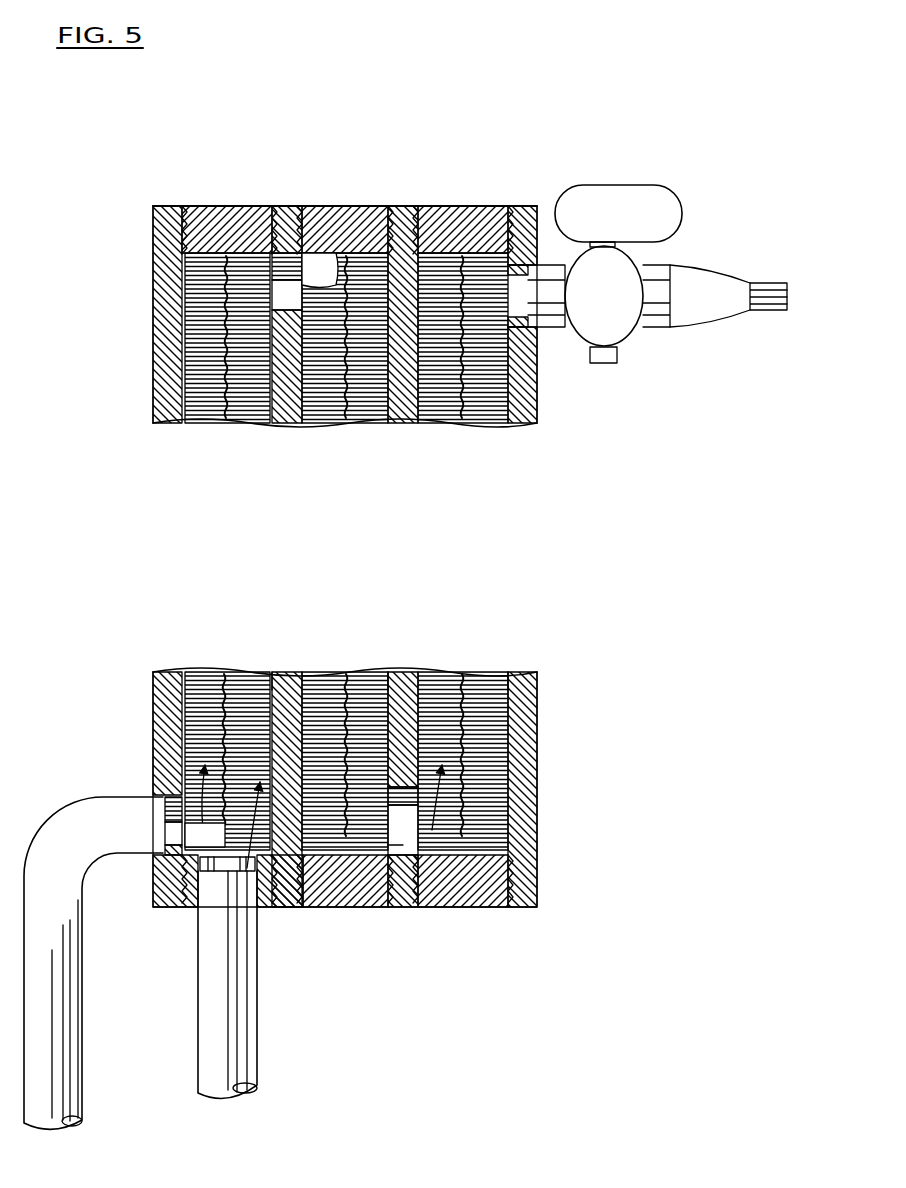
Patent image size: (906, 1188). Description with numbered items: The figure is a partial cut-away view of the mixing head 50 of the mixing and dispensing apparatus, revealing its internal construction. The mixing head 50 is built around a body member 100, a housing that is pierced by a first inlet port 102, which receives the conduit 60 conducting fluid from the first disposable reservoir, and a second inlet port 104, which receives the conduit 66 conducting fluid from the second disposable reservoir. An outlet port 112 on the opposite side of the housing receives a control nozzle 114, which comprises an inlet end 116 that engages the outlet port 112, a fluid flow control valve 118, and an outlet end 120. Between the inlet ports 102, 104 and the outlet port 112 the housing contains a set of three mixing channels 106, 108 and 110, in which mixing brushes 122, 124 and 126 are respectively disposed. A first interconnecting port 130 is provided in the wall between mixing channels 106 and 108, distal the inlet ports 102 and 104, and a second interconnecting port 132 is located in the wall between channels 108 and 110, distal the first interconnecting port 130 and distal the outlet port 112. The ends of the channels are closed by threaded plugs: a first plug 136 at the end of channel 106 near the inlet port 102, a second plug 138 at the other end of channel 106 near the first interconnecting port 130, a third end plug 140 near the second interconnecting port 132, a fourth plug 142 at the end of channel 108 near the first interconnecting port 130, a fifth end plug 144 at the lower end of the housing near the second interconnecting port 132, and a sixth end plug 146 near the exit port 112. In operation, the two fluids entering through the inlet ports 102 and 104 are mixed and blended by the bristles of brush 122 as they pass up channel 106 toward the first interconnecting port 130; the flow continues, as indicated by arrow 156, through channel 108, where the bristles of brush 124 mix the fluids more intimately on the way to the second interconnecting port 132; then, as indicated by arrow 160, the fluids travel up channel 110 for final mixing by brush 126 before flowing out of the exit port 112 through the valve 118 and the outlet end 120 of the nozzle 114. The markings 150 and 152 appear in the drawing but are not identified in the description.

The mixing head 50 is at (218, 152).
The conduit 60 is at (260, 995).
The conduit 66 is at (86, 1053).
The body member 100 is at (538, 505).
The first inlet port 102 is at (232, 870).
The second inlet port 104 is at (163, 855).
The mixing channel 106 is at (222, 648).
The mixing channel 108 is at (350, 646).
The mixing channel 110 is at (456, 646).
The outlet port 112 is at (545, 308).
The control nozzle 114 is at (632, 338).
The inlet end 116 is at (566, 258).
The fluid flow control valve 118 is at (648, 254).
The outlet end 120 is at (790, 297).
The mixing brush 122 is at (222, 428).
The mixing brush 124 is at (346, 428).
The mixing brush 126 is at (460, 428).
The first interconnecting port 130 is at (280, 296).
The second interconnecting port 132 is at (400, 840).
The first plug 136 is at (262, 907).
The second plug 138 is at (205, 207).
The third end plug 140 is at (360, 907).
The fourth plug 142 is at (345, 207).
The fifth end plug 144 is at (474, 907).
The sixth end plug 146 is at (462, 207).
The inlet flow passage 150 is at (262, 784).
The inlet chamber 152 is at (205, 834).
The arrow 156 is at (328, 310).
The arrow 160 is at (412, 822).